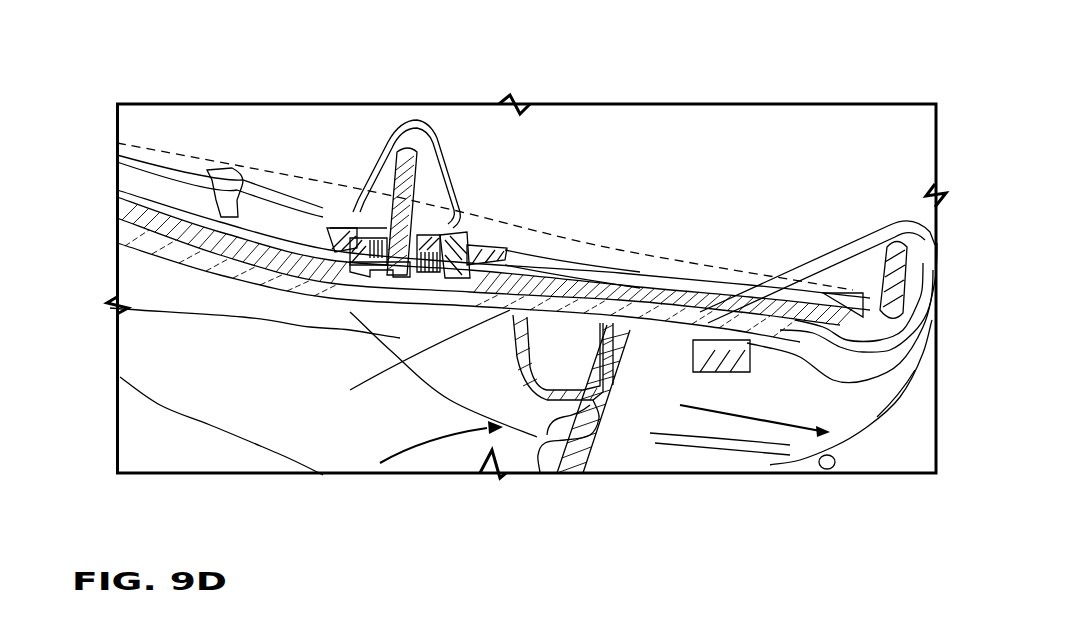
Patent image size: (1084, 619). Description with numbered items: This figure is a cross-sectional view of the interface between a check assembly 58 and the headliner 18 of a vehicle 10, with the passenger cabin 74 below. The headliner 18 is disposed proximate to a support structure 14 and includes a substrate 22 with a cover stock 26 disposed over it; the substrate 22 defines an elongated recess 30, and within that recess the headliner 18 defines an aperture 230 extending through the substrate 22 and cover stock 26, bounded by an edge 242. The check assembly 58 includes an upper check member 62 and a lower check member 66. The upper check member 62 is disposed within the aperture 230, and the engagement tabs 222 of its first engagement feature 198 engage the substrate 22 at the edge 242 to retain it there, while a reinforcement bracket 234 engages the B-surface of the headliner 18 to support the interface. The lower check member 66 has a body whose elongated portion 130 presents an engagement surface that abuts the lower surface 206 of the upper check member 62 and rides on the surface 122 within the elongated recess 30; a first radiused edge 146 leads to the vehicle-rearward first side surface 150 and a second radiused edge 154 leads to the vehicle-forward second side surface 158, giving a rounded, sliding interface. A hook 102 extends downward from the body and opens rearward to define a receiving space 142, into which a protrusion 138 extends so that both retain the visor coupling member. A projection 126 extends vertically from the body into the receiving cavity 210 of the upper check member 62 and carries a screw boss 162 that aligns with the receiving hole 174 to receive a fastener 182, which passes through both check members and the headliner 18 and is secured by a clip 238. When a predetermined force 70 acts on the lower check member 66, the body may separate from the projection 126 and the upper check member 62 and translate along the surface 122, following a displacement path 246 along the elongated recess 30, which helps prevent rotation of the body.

The vehicle 10 is at (868, 95).
The support structure 14 is at (630, 250).
The headliner 18 is at (877, 417).
The substrate 22 is at (673, 293).
The cover stock 26 is at (823, 362).
The elongated recess 30 is at (747, 400).
The check assembly 58 is at (513, 195).
The upper check member 62 is at (350, 223).
The lower check member 66 is at (563, 410).
The predetermined force 70 is at (480, 362).
The passenger cabin 74 is at (187, 450).
The hook 102 is at (548, 440).
The surface 122 is at (740, 373).
The projection 126 is at (380, 270).
The elongated portion 130 is at (743, 330).
The protrusion 138 is at (547, 403).
The receiving space 142 is at (543, 407).
The first radiused edge 146 is at (507, 333).
The first side surface 150 is at (520, 343).
The second radiused edge 154 is at (787, 330).
The second side surface 158 is at (697, 343).
The screw boss 162 is at (465, 237).
The receiving hole 174 is at (595, 450).
The fastener 182 is at (432, 212).
The first engagement feature 198 is at (345, 240).
The lower surface 206 is at (375, 268).
The receiving cavity 210 is at (427, 290).
The engagement tabs 222 is at (343, 250).
The aperture 230 is at (520, 248).
The reinforcement bracket 234 is at (210, 168).
The clip 238 is at (405, 121).
The edge 242 is at (340, 240).
The displacement path 246 is at (773, 400).